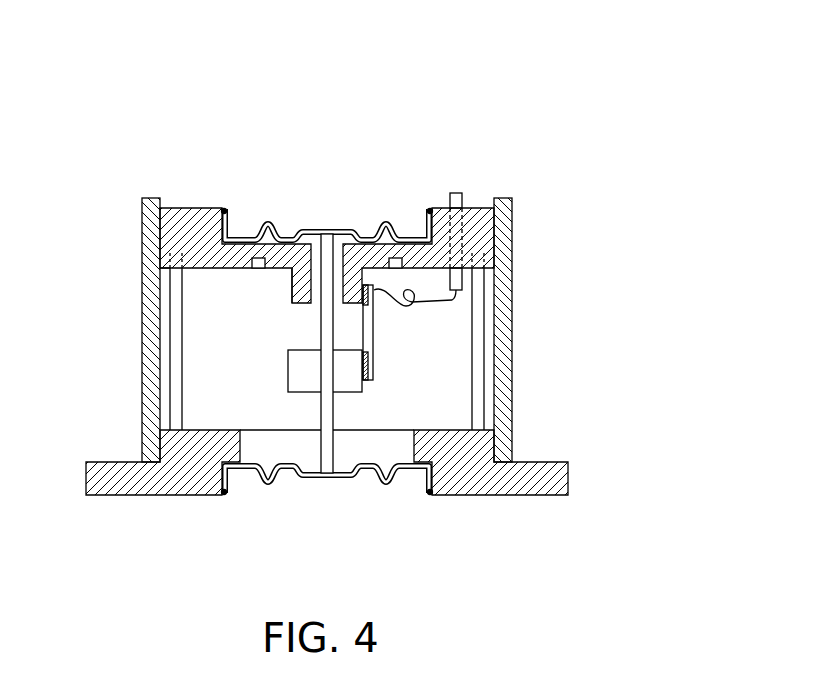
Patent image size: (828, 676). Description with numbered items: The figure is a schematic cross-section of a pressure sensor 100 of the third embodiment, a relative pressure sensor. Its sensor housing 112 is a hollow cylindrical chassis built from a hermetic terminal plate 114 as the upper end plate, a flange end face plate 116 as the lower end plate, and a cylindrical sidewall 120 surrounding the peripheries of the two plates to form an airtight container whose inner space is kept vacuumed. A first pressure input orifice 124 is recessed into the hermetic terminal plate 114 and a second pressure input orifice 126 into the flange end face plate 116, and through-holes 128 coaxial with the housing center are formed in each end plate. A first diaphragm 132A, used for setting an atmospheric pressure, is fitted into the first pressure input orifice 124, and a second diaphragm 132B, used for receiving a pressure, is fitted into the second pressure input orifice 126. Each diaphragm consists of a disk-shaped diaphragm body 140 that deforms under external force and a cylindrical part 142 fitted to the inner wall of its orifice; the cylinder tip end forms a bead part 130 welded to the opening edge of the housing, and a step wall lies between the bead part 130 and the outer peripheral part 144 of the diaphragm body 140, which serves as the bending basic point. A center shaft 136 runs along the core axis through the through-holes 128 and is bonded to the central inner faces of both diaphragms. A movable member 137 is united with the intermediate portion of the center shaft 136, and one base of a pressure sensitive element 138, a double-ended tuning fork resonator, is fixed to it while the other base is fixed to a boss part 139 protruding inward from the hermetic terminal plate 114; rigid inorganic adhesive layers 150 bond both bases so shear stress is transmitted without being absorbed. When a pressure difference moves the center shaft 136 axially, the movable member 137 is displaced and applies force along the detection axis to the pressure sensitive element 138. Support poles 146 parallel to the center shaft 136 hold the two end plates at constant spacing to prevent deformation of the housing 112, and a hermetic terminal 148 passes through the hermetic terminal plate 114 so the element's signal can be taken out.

The pressure sensor 100 is at (549, 118).
The sensor housing 112 is at (600, 235).
The hermetic terminal plate 114 is at (473, 233).
The flange end face plate 116 is at (530, 470).
The cylindrical sidewall 120 is at (512, 325).
The first pressure input orifice 124 is at (229, 236).
The second pressure input orifice 126 is at (226, 475).
The through-hole 128 is at (311, 308).
The bead part 130 is at (224, 206).
The first diaphragm 132A is at (313, 203).
The second diaphragm 132B is at (341, 497).
The center shaft 136 is at (334, 413).
The movable member 137 is at (288, 368).
The pressure sensitive element 138 is at (358, 332).
The boss part 139 is at (292, 279).
The diaphragm body 140 is at (327, 349).
The cylindrical part 142 is at (327, 349).
The outer peripheral part 144 is at (424, 240).
The support pole 146 is at (168, 345).
The hermetic terminal 148 is at (457, 192).
The adhesive layer 150 is at (364, 307).